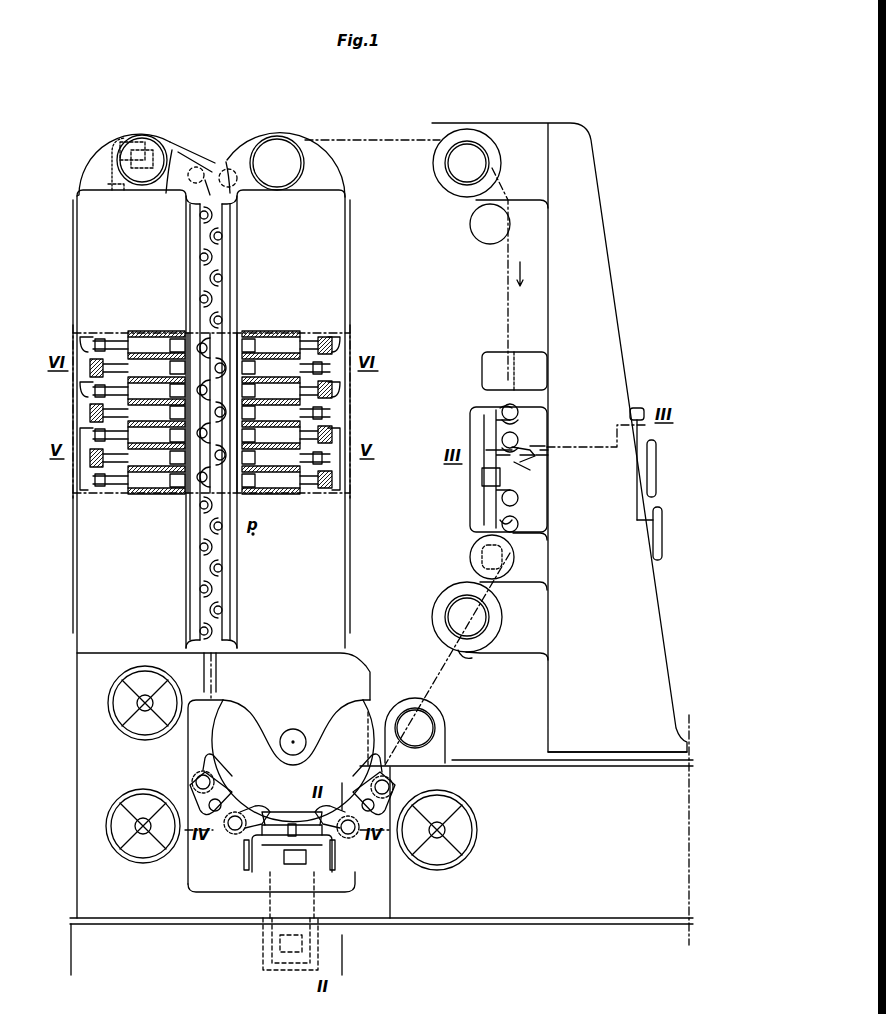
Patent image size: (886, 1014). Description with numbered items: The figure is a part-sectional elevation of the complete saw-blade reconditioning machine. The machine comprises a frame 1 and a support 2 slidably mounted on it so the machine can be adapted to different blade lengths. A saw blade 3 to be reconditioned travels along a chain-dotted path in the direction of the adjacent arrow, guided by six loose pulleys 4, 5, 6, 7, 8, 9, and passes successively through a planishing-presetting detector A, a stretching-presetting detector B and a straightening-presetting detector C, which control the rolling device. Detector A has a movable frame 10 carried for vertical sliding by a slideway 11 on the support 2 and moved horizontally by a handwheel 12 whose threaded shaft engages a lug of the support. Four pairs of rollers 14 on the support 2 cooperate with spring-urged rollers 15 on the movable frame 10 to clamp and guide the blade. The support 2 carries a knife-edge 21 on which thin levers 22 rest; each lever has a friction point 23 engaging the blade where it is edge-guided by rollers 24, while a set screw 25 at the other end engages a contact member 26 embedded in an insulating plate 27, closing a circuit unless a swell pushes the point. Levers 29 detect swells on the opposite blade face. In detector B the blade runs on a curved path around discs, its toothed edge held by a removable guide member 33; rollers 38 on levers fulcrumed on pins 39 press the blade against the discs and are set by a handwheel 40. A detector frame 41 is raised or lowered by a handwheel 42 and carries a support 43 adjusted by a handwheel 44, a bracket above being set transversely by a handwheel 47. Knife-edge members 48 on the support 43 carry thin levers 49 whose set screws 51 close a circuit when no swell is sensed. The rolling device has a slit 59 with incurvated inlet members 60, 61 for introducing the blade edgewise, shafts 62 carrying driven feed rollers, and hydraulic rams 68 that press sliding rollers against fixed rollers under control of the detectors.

The frame 1 is at (108, 775).
The support 2 is at (559, 437).
The saw blade 3 is at (510, 301).
The loose pulley 4 is at (277, 163).
The loose pulley 5 is at (467, 163).
The loose pulley 6 is at (509, 222).
The loose pulley 7 is at (492, 557).
The loose pulley 8 is at (490, 621).
The loose pulley 9 is at (447, 659).
The movable frame 10 is at (470, 432).
The slideway 11 is at (624, 412).
The handwheel 12 is at (656, 484).
The rollers 14 is at (515, 404).
The rollers 15 is at (502, 404).
The knife-edge 21 is at (528, 458).
The thin levers 22 is at (536, 458).
The friction point 23 is at (532, 472).
The rollers 24 is at (500, 452).
The set screw 25 is at (540, 446).
The contact member 26 is at (544, 450).
The insulating plate 27 is at (545, 455).
The levers 29 is at (482, 477).
The removable guide member 33 is at (222, 786).
The rollers 38 is at (208, 766).
The pins 39 is at (196, 781).
The handwheel 40 is at (125, 846).
The detector frame 41 is at (270, 868).
The handwheel 42 is at (472, 840).
The support 43 is at (294, 859).
The handwheel 44 is at (333, 868).
The handwheel 47 is at (248, 860).
The knife-edge members 48 is at (285, 845).
The thin levers 49 is at (292, 824).
The set screw 51 is at (262, 832).
The slit 59 is at (210, 183).
The incurvated inlet member 60 is at (197, 268).
The incurvated inlet member 61 is at (230, 276).
The shafts 62 is at (200, 483).
The hydraulic ram 68 is at (322, 424).
The planishing-presetting detector A is at (470, 505).
The stretching-presetting detector B is at (303, 848).
The straightening-presetting detector C is at (514, 371).